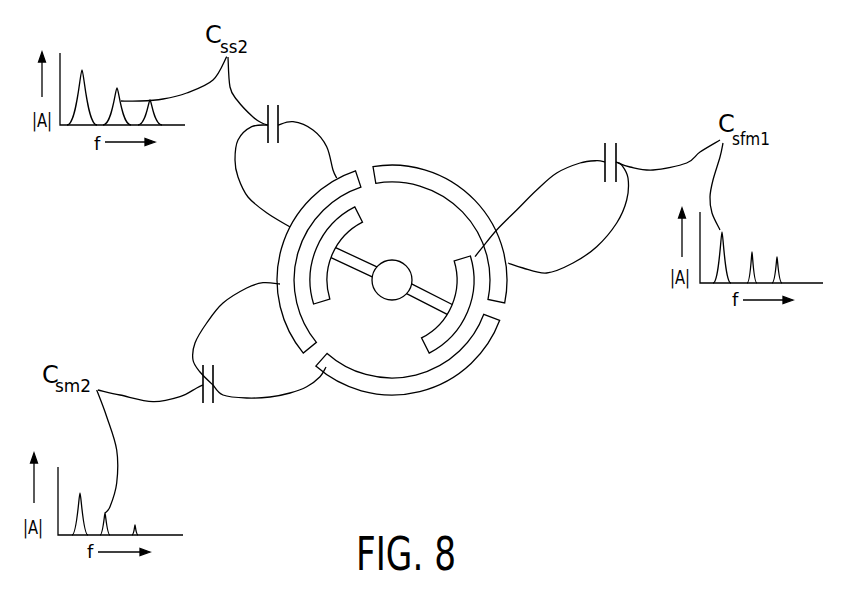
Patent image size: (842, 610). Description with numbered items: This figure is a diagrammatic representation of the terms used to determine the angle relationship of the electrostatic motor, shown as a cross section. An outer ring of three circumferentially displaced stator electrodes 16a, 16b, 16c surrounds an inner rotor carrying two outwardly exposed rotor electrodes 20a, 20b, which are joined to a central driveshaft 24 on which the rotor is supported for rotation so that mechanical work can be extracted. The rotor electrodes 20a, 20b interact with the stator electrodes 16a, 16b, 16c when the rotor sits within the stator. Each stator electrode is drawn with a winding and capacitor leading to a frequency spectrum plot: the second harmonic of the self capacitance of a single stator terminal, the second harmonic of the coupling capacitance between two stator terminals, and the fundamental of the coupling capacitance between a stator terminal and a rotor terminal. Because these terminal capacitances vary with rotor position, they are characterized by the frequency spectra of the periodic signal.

The stator electrode 16a is at (455, 192).
The stator electrode 16b is at (430, 385).
The stator electrode 16c is at (278, 271).
The rotor electrode 20a is at (322, 258).
The rotor electrode 20b is at (445, 337).
The driveshaft 24 is at (378, 294).